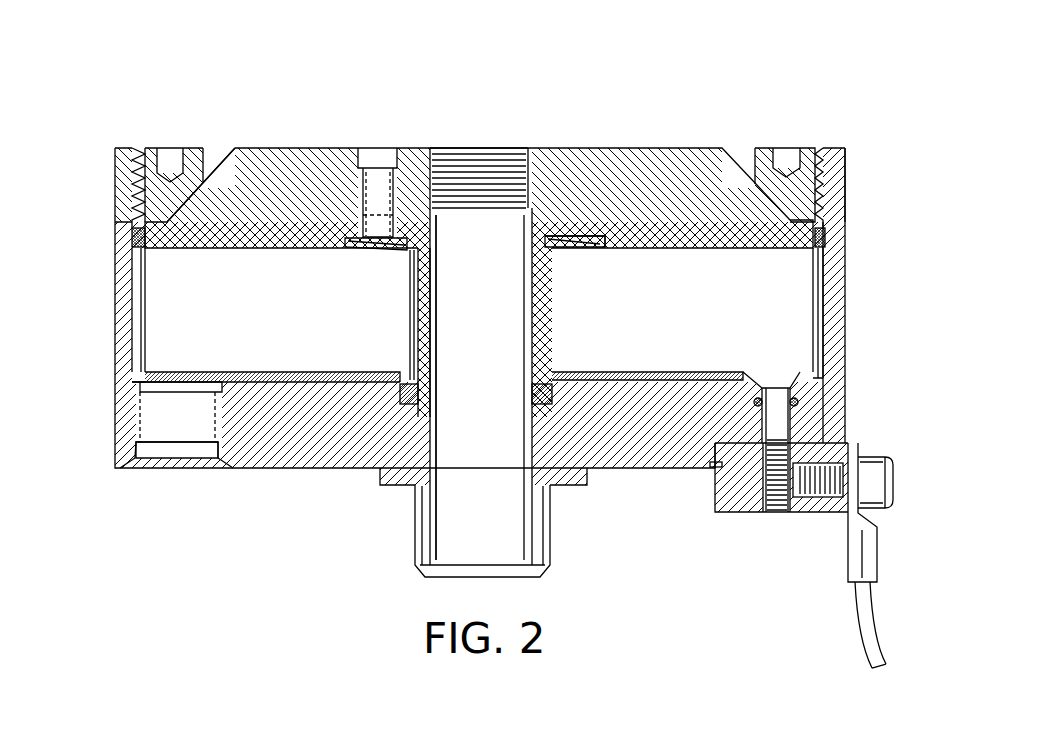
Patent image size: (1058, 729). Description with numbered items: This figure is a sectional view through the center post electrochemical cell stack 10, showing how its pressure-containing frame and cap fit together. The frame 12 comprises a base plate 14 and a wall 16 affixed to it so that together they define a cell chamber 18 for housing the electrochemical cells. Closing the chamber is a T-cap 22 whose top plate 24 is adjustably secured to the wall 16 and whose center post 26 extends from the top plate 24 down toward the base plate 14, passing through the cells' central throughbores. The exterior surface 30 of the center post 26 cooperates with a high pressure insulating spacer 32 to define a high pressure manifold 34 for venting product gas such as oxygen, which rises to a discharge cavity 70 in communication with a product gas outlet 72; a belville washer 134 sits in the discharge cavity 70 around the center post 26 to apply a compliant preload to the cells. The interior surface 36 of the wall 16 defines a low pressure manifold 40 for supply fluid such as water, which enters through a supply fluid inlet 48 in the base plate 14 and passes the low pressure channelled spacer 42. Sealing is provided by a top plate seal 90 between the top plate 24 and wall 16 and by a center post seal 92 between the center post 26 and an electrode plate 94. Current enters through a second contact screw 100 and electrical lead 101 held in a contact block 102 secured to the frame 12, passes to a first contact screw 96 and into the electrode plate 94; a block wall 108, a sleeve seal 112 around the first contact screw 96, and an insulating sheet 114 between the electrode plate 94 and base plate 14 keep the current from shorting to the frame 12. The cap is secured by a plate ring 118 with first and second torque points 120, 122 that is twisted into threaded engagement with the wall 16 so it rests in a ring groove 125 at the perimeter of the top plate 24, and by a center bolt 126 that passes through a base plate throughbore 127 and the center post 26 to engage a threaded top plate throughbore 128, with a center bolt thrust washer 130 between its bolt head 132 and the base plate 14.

The center post electrochemical cell stack 10 is at (872, 64).
The frame 12 is at (205, 518).
The base plate 14 is at (270, 462).
The wall 16 is at (130, 190).
The cell chamber 18 is at (166, 323).
The T-cap 22 is at (650, 128).
The top plate 24 is at (321, 162).
The center post 26 is at (412, 254).
The exterior surface 30 is at (412, 283).
The high pressure insulating spacer 32 is at (418, 320).
The high pressure manifold 34 is at (406, 346).
The interior surface 36 is at (832, 286).
The low pressure manifold 40 is at (808, 338).
The low pressure channelled spacer 42 is at (813, 268).
The supply fluid inlet 48 is at (174, 482).
The discharge cavity 70 is at (566, 228).
The product gas outlet 72 is at (375, 184).
The top plate seal 90 is at (131, 240).
The center post seal 92 is at (560, 376).
The electrode plate 94 is at (668, 376).
The first contact screw 96 is at (782, 428).
The second contact screw 100 is at (875, 460).
The electrical lead 101 is at (862, 546).
The contact block 102 is at (740, 500).
The block wall 108 is at (716, 472).
The sleeve seal 112 is at (800, 398).
The insulating sheet 114 is at (690, 374).
The plate ring 118 is at (188, 142).
The first torque point 120 is at (170, 142).
The second torque point 122 is at (788, 142).
The ring groove 125 is at (216, 144).
The center bolt 126 is at (496, 392).
The base plate throughbore 127 is at (443, 452).
The threaded top plate throughbore 128 is at (436, 148).
The center bolt thrust washer 130 is at (390, 480).
The bolt head 132 is at (430, 528).
The belville washer 134 is at (586, 250).